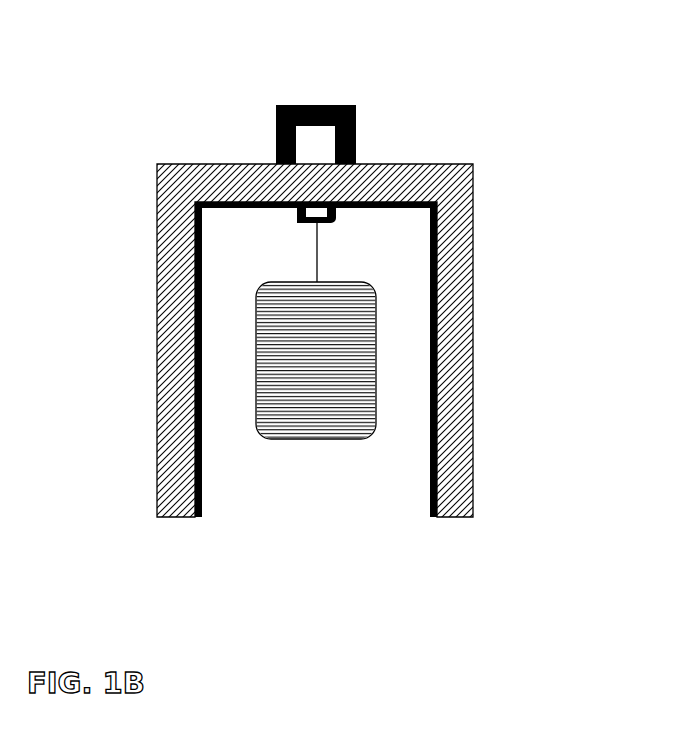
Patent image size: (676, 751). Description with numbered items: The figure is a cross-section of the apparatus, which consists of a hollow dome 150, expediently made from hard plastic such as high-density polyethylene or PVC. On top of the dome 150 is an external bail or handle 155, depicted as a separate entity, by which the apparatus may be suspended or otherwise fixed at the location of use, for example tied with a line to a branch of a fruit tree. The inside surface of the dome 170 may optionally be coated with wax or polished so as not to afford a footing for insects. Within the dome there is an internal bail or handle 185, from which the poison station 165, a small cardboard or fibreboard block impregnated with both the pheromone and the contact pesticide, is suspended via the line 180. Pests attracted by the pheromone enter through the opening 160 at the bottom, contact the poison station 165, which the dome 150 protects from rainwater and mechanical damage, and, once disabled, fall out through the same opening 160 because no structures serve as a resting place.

The dome 150 is at (505, 318).
The external bail or handle 155 is at (315, 105).
The opening 160 is at (341, 510).
The poison station 165 is at (301, 350).
The inside surface of the dome 170 is at (201, 439).
The line 180 is at (317, 248).
The internal bail or handle 185 is at (337, 218).